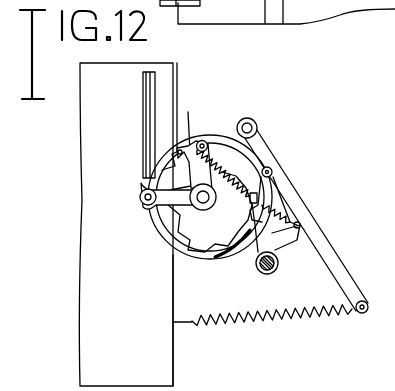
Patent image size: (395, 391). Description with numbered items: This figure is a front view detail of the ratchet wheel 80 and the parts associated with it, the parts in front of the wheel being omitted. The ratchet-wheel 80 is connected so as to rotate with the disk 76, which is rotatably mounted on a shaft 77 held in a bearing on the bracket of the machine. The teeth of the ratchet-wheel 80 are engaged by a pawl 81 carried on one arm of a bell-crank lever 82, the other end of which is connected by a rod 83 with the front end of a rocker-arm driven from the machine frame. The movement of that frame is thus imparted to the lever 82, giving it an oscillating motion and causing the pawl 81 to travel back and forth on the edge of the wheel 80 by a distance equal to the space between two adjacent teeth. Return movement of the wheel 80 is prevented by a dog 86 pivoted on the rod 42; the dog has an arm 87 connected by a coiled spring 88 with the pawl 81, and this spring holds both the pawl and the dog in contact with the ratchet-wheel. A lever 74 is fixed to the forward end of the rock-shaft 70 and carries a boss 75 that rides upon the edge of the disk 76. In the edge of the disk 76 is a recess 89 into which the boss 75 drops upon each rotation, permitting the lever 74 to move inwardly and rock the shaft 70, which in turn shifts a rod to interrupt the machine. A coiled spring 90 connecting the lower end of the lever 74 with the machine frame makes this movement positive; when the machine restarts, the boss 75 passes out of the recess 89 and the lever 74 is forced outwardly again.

The rod 42 is at (278, 268).
The rock-shaft 70 is at (250, 126).
The lever 74 is at (293, 199).
The boss 75 is at (270, 169).
The disk 76 is at (220, 134).
The shaft 77 is at (172, 238).
The ratchet-wheel 80 is at (185, 250).
The pawl 81 is at (188, 111).
The bell-crank lever 82 is at (145, 203).
The rod 83 is at (140, 115).
The dog 86 is at (270, 236).
The arm 87 is at (300, 242).
The coiled spring 88 is at (223, 148).
The recess 89 is at (193, 255).
The coiled spring 90 is at (259, 323).